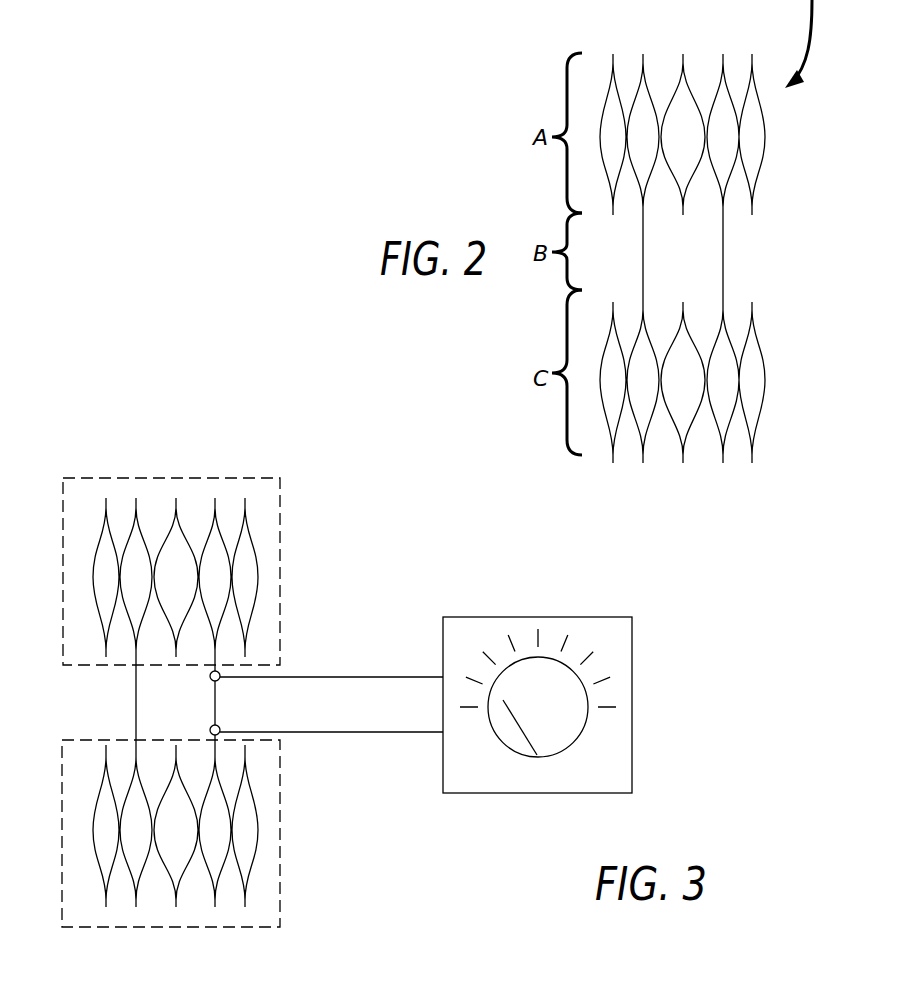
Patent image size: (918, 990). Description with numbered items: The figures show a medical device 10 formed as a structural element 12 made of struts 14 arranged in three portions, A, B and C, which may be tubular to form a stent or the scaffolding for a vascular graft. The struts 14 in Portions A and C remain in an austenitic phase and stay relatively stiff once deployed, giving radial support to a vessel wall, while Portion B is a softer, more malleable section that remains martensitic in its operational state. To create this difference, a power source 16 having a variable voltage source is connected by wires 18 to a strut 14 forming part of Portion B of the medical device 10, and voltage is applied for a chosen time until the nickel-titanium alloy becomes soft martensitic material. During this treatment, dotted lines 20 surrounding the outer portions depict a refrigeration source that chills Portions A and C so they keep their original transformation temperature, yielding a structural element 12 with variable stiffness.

In FIG. 3, the medical device 10 is at (303, 510).
In FIG. 2, the structural element 12 is at (730, 258).
In FIG. 2, the struts 14 is at (765, 135).
In FIG. 3, the struts 14 is at (215, 703).
In FIG. 3, the power source 16 is at (632, 693).
In FIG. 3, the wires 18 is at (367, 678).
In FIG. 3, the dotted lines 20 is at (133, 478).